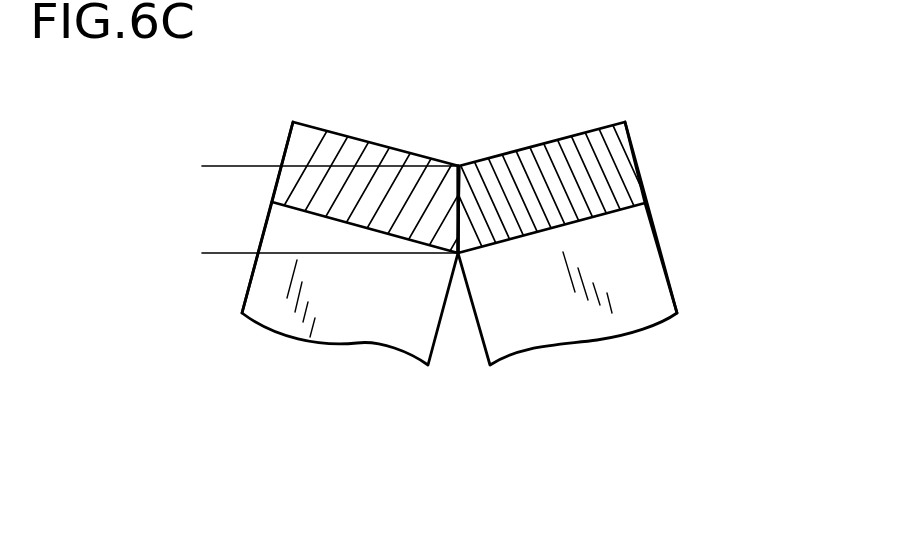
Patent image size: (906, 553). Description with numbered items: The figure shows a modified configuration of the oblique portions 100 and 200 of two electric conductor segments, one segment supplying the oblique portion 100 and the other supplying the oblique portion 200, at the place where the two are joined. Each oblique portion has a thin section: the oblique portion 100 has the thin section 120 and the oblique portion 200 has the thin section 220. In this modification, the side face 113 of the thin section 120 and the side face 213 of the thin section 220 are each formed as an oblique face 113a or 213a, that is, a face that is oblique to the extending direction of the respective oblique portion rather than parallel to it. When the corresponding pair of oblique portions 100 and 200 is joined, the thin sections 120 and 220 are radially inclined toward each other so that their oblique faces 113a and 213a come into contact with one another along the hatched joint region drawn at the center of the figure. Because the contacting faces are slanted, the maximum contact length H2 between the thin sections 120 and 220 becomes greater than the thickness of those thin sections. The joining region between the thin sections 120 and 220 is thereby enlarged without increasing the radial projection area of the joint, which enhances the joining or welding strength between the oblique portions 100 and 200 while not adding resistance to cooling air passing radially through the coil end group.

The oblique portion 100 is at (307, 360).
The oblique portion 200 is at (600, 362).
The side face 113 is at (441, 158).
The oblique face 113a is at (455, 220).
The side face 213 is at (524, 155).
The oblique face 213a is at (458, 185).
The thin section 120 is at (255, 287).
The thin section 220 is at (658, 265).
The maximum contact length H2 is at (206, 166).